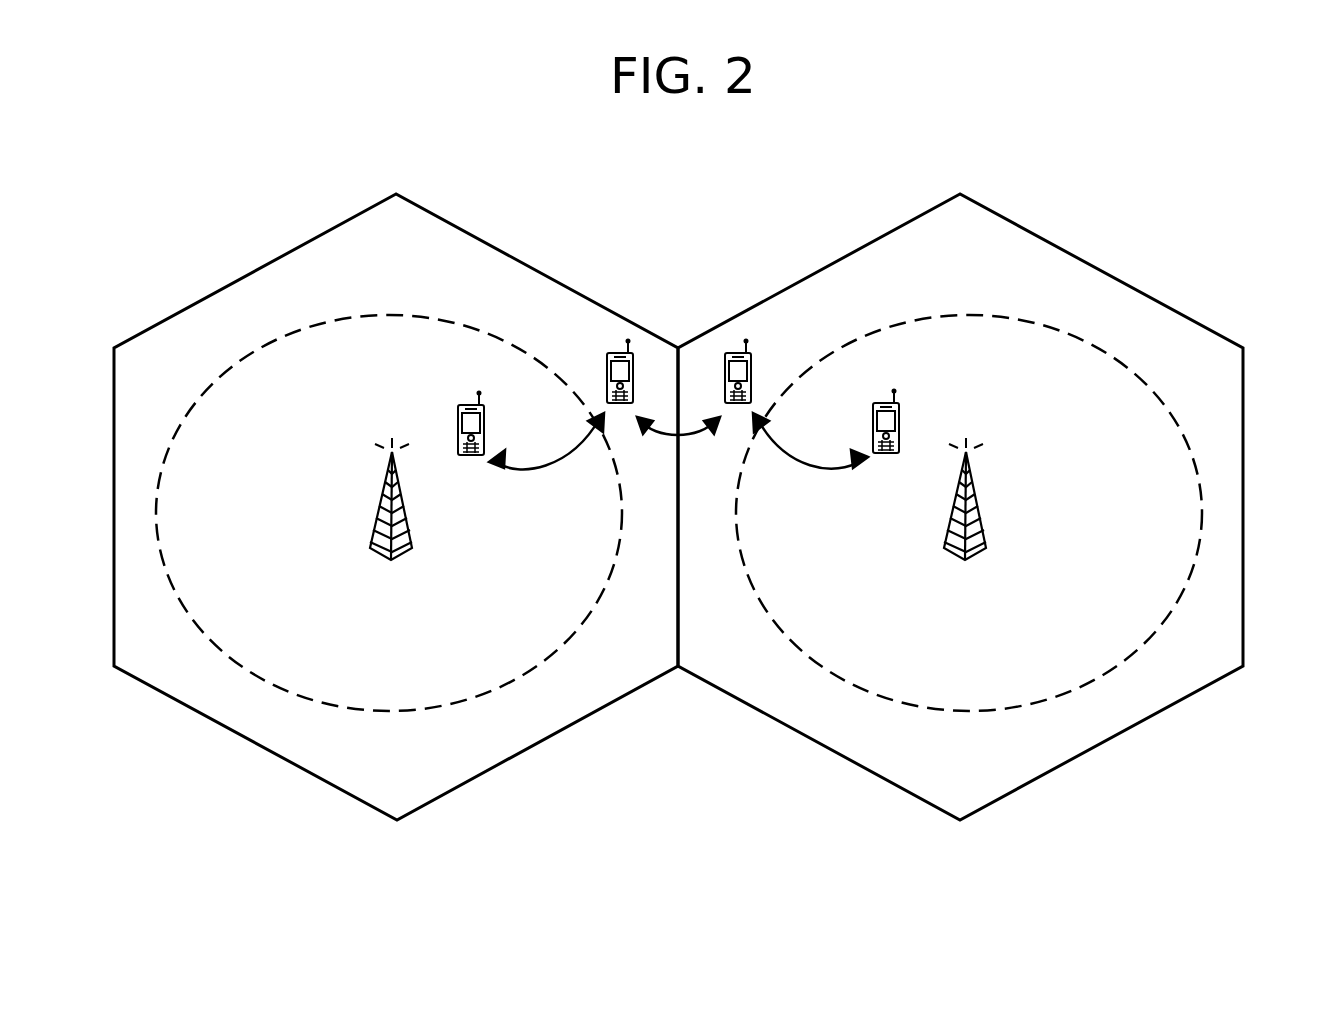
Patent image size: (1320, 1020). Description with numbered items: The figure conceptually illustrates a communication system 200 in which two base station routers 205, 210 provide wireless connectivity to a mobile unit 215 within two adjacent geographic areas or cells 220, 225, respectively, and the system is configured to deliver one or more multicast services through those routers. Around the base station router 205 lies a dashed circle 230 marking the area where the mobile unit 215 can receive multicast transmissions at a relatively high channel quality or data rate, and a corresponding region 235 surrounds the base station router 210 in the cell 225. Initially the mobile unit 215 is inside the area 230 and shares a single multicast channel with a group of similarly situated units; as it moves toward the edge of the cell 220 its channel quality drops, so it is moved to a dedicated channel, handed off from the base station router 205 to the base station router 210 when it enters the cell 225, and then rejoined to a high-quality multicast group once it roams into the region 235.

The communication system 200 is at (1197, 205).
The base station router 205 is at (378, 558).
The base station router 210 is at (980, 558).
The mobile unit 215 is at (462, 400).
The cell 220 is at (520, 260).
The cell 225 is at (837, 260).
The dashed circle 230 is at (605, 593).
The region 235 is at (755, 593).